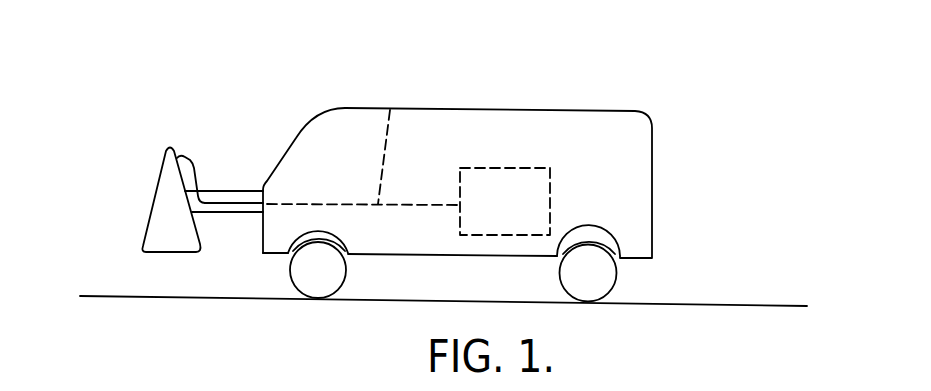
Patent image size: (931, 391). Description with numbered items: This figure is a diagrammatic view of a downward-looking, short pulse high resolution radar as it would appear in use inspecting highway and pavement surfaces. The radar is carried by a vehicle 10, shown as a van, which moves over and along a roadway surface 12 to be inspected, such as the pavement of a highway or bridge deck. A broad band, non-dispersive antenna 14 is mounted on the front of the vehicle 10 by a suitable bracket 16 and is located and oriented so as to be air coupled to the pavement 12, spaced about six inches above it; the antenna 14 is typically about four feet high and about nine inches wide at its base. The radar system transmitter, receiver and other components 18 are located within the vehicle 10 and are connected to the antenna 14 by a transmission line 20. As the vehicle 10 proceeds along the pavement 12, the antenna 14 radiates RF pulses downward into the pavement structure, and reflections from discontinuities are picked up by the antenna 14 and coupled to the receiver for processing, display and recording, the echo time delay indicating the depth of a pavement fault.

The vehicle 10 is at (545, 104).
The roadway surface 12 is at (98, 296).
The antenna 14 is at (157, 180).
The bracket 16 is at (229, 190).
The radar system transmitter, receiver and other components 18 is at (548, 168).
The transmission line 20 is at (248, 206).